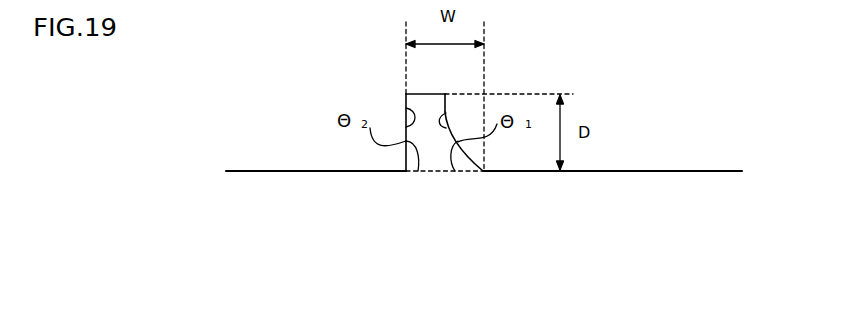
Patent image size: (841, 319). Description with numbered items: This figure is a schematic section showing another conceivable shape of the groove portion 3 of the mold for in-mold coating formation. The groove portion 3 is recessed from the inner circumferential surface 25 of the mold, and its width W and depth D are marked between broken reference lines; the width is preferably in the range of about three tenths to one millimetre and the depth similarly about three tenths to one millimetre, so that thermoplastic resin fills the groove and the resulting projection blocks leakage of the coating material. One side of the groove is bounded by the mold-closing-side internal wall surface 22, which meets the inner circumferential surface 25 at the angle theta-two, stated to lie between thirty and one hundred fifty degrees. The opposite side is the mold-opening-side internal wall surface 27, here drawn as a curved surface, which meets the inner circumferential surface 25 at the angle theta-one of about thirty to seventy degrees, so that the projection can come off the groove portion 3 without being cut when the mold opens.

The groove portion 3 is at (438, 182).
The mold-closing-side internal wall surface 22 is at (402, 110).
The inner circumferential surface 25 is at (328, 172).
The mold-opening-side internal wall surface 27 is at (445, 112).